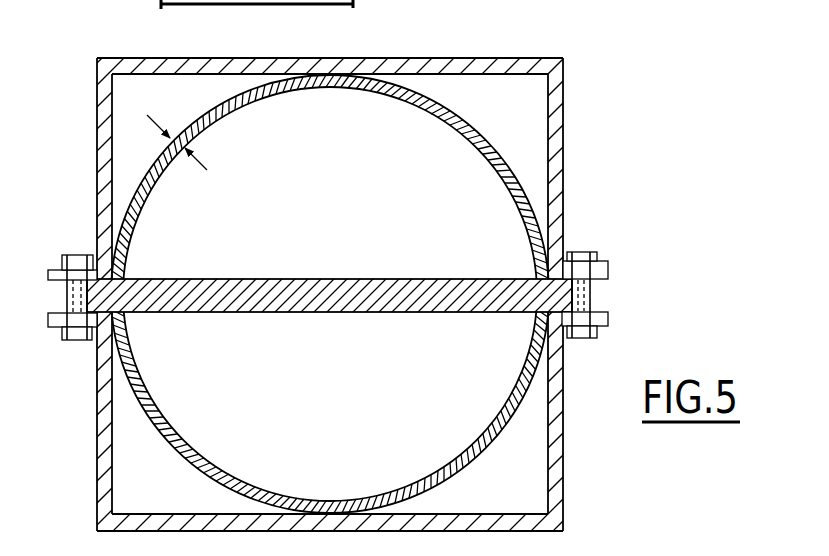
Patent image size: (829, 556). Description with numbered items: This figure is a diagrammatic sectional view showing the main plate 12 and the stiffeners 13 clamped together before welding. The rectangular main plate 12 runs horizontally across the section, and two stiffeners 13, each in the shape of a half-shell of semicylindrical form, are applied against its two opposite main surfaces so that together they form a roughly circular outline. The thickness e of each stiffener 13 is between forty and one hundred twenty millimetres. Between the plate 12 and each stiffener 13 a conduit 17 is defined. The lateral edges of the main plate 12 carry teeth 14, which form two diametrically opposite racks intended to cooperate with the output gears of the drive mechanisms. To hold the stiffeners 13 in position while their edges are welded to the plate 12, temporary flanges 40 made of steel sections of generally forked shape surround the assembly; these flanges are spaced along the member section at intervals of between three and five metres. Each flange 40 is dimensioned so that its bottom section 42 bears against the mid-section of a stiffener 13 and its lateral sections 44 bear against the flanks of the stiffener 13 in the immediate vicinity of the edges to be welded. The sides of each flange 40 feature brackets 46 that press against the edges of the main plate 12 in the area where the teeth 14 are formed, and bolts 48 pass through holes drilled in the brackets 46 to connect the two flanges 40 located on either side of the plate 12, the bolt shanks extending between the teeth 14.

The main plate 12 is at (383, 313).
The stiffener 13 is at (507, 178).
The teeth 14 is at (595, 296).
The conduit 17 is at (375, 112).
The temporary flange 40 is at (563, 120).
The bottom section 42 is at (481, 57).
The lateral sections 44 is at (562, 193).
The brackets 46 is at (600, 267).
The bolts 48 is at (605, 268).
The thickness e is at (188, 144).